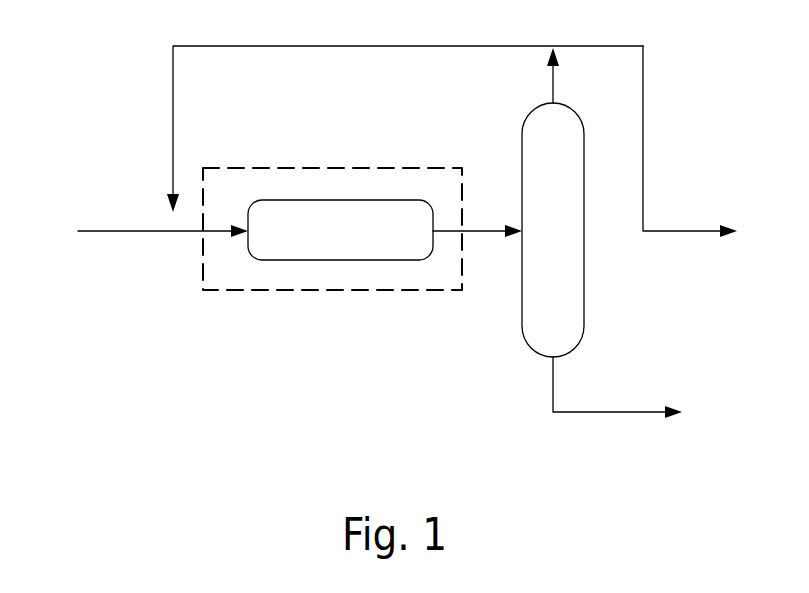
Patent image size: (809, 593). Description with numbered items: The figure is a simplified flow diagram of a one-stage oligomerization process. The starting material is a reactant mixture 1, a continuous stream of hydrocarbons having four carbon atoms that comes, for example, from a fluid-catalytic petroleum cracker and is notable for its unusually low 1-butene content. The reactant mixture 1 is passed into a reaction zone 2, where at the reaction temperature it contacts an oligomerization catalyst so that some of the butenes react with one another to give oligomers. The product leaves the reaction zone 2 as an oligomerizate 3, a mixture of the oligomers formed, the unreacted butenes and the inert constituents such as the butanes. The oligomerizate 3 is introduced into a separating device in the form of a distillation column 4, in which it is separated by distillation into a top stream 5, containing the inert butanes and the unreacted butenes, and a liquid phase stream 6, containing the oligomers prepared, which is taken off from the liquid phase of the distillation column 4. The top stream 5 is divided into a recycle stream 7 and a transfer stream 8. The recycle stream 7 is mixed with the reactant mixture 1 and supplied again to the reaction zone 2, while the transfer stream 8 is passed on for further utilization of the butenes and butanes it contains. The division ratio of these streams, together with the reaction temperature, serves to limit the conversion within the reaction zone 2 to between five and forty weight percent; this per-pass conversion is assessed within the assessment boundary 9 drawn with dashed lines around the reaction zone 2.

The reactant mixture 1 is at (142, 231).
The reaction zone 2 is at (310, 246).
The oligomerizate 3 is at (487, 231).
The distillation column 4 is at (553, 292).
The top stream 5 is at (553, 83).
The liquid phase stream 6 is at (643, 412).
The recycle stream 7 is at (173, 78).
The transfer stream 8 is at (643, 138).
The assessment boundary 9 is at (417, 290).